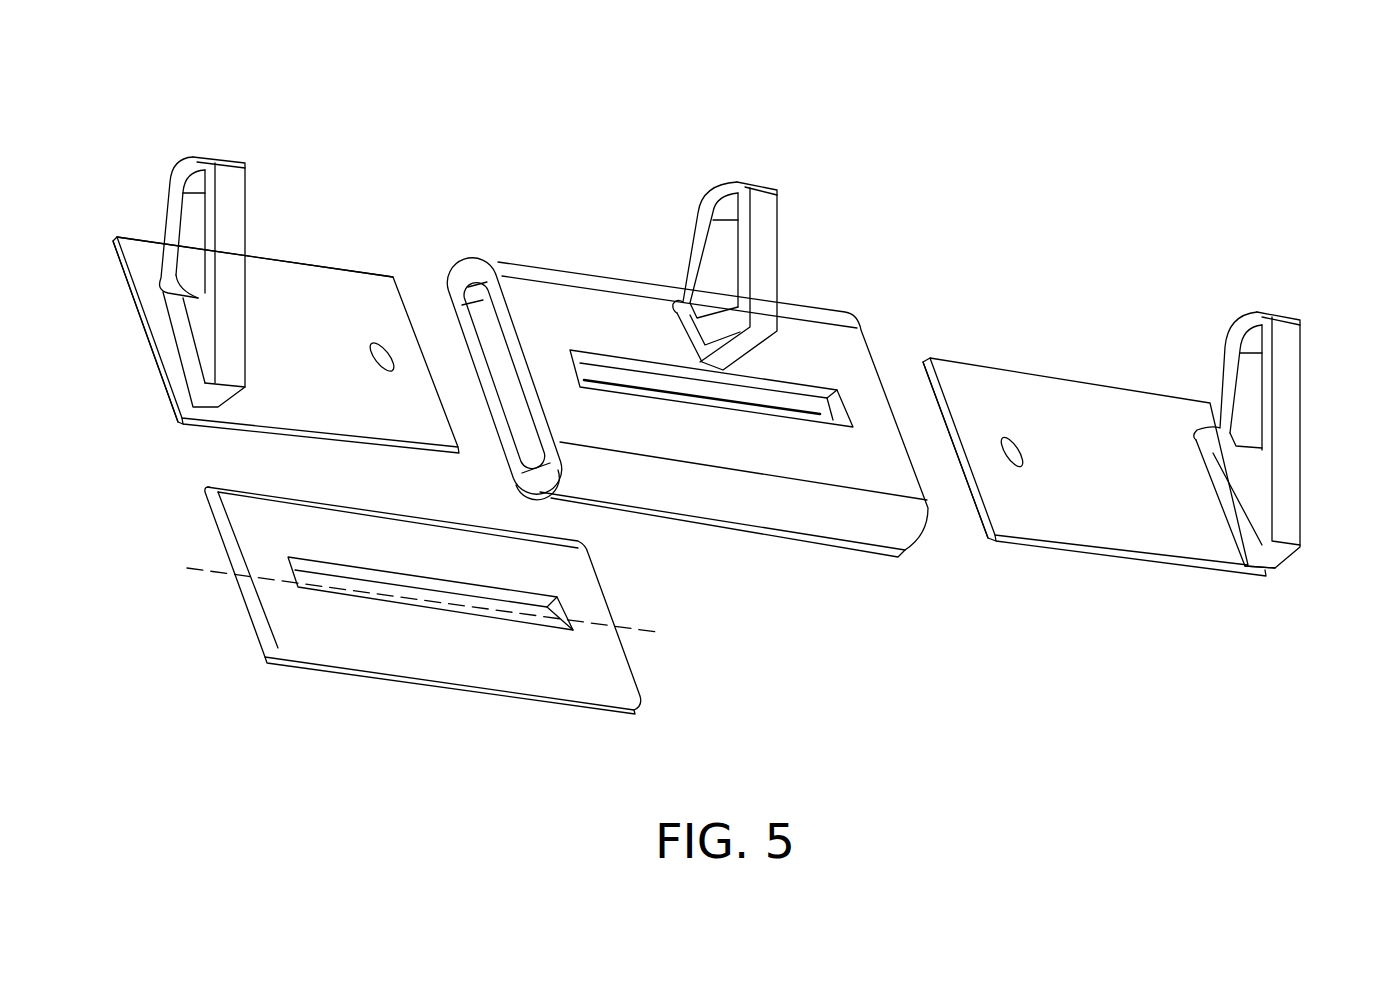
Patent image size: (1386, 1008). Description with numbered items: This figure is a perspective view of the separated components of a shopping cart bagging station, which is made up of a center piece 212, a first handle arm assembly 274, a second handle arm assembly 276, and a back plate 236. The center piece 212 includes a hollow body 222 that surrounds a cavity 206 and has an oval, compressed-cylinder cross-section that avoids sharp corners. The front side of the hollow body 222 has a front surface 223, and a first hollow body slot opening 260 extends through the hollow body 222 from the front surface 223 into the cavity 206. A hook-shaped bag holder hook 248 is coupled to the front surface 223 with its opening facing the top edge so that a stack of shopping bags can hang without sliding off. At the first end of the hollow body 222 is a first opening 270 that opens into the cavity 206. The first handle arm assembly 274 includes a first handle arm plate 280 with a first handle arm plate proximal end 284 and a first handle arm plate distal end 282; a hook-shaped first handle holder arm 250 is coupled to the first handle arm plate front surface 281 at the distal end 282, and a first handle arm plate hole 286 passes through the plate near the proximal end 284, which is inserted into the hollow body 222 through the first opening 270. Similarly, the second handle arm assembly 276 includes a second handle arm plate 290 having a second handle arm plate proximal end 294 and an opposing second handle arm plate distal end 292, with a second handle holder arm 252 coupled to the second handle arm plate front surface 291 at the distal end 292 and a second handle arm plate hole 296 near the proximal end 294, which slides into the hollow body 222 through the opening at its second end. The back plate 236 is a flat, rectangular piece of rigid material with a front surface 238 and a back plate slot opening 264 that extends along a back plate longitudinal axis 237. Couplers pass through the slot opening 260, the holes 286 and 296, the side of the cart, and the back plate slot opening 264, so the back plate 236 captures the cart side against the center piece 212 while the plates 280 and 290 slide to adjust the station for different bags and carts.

The cavity 206 is at (483, 333).
The center piece 212 is at (642, 150).
The hollow body 222 is at (585, 297).
The front surface 223 is at (747, 453).
The back plate 236 is at (418, 700).
The back plate longitudinal axis 237 is at (640, 633).
The front surface 238 is at (473, 648).
The bag holder hook 248 is at (770, 218).
The first handle holder arm 250 is at (200, 160).
The second handle holder arm 252 is at (1255, 317).
The first hollow body slot opening 260 is at (815, 413).
The back plate slot opening 264 is at (513, 617).
The first opening 270 is at (478, 282).
The first handle arm assembly 274 is at (357, 157).
The second handle arm assembly 276 is at (1113, 323).
The first handle arm plate 280 is at (308, 403).
The first handle arm plate front surface 281 is at (349, 362).
The first handle arm plate distal end 282 is at (177, 403).
The first handle arm plate proximal end 284 is at (408, 303).
The first handle arm plate hole 286 is at (380, 340).
The second handle arm plate 290 is at (1135, 535).
The second handle arm plate front surface 291 is at (1153, 482).
The second handle arm plate distal end 292 is at (1270, 573).
The second handle arm plate proximal end 294 is at (988, 520).
The second handle arm plate hole 296 is at (1017, 447).